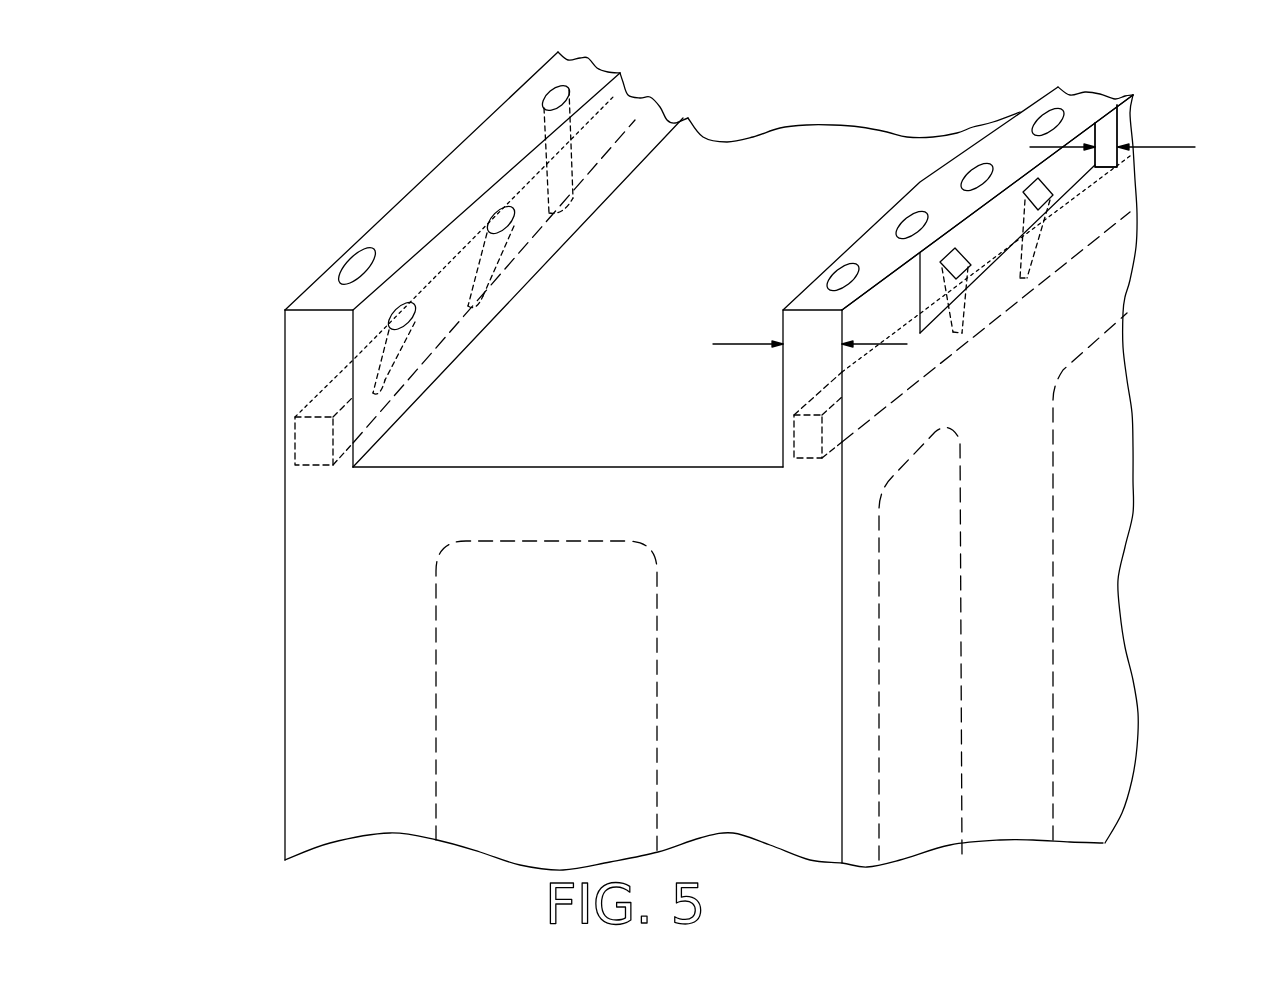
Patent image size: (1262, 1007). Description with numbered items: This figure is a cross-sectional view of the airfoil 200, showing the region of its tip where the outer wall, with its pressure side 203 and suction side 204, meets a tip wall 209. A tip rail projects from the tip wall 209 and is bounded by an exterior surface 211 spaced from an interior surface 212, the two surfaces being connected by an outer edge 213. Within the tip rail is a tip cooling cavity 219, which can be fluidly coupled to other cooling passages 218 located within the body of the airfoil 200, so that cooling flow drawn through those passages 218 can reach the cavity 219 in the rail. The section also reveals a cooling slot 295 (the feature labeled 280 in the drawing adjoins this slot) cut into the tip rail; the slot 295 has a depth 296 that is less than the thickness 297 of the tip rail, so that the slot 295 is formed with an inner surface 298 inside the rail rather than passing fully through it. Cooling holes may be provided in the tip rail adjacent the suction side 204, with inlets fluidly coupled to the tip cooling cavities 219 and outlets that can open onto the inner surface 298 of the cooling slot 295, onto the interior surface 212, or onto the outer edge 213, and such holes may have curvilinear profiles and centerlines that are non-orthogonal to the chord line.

The airfoil 200 is at (257, 817).
The pressure side 203 is at (1113, 300).
The suction side 204 is at (284, 587).
The tip wall 209 is at (557, 443).
The exterior surface 211 is at (284, 360).
The interior surface 212 is at (438, 257).
The outer edge 213 is at (447, 172).
The cooling passages 218 is at (572, 722).
The tip cooling cavity 219 is at (295, 432).
The channel opening 280 is at (1080, 165).
The cooling slot 295 is at (1106, 136).
The depth 296 is at (1168, 147).
The thickness 297 is at (737, 342).
The inner surface 298 is at (995, 208).